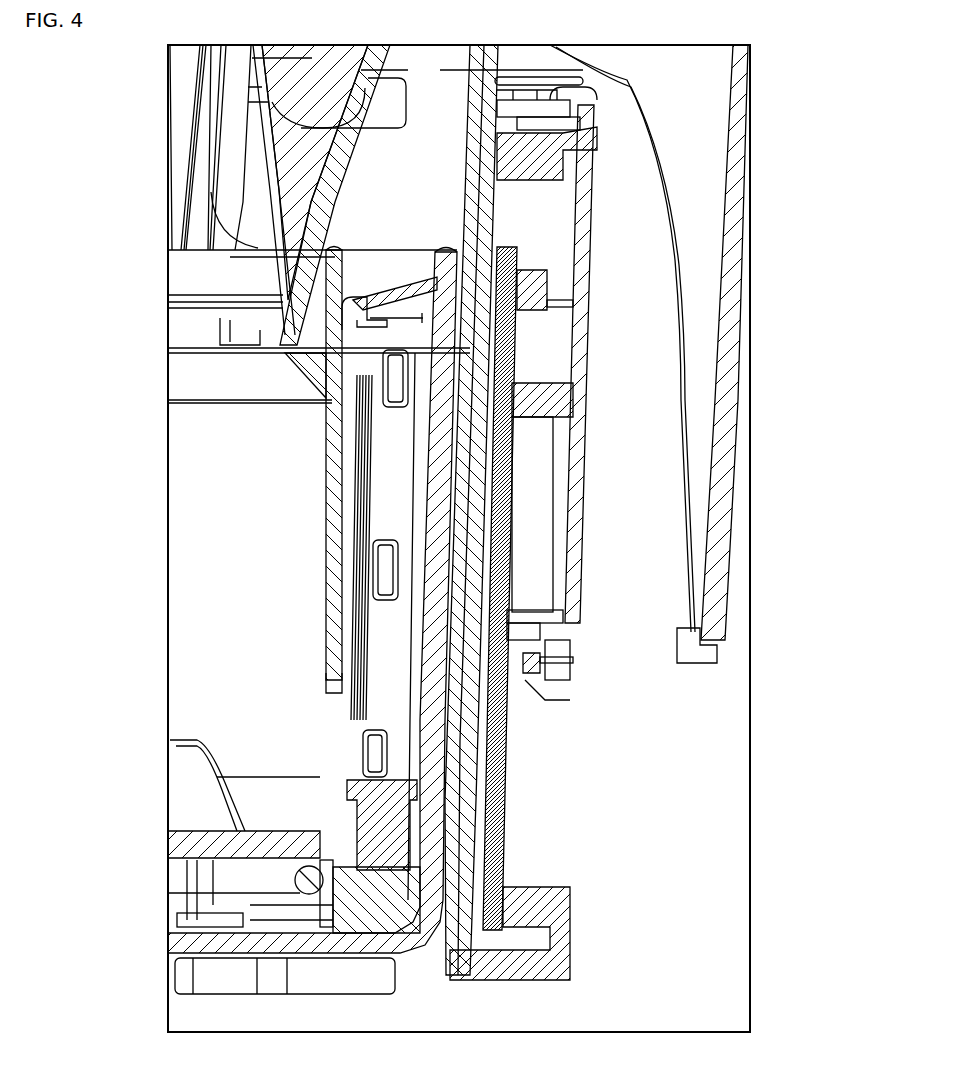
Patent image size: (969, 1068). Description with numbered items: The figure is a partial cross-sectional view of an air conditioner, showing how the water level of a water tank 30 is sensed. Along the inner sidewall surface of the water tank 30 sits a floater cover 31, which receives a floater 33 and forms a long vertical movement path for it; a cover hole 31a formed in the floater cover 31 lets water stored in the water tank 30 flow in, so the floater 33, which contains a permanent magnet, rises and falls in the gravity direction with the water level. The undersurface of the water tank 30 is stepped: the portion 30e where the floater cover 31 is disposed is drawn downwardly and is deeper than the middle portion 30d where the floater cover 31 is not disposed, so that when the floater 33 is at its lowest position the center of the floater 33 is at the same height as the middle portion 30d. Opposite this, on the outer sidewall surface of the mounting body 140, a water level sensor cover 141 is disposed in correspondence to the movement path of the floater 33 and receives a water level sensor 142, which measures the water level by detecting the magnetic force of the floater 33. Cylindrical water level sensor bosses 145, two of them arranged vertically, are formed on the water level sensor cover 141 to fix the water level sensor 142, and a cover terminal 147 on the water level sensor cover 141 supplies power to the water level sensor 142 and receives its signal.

The water tank 30 is at (248, 617).
The middle portion 30d is at (217, 843).
The portion where the floater cover is disposed 30e is at (415, 915).
The floater cover 31 is at (340, 430).
The cover hole 31a is at (370, 561).
The floater 33 is at (375, 822).
The mounting body 140 is at (450, 800).
The water level sensor cover 141 is at (573, 577).
The water level sensor 142 is at (510, 493).
The water level sensor boss 145 is at (530, 295).
The cover terminal 147 is at (523, 660).